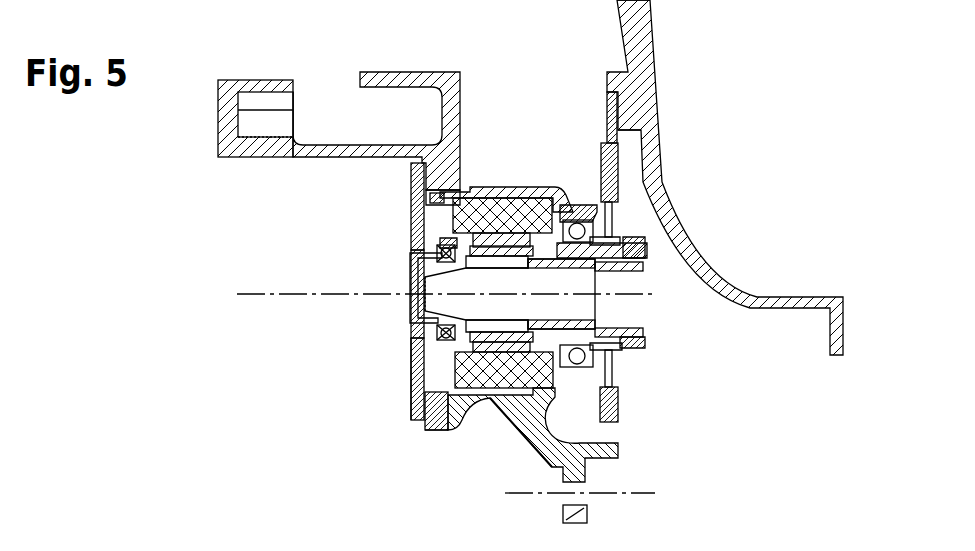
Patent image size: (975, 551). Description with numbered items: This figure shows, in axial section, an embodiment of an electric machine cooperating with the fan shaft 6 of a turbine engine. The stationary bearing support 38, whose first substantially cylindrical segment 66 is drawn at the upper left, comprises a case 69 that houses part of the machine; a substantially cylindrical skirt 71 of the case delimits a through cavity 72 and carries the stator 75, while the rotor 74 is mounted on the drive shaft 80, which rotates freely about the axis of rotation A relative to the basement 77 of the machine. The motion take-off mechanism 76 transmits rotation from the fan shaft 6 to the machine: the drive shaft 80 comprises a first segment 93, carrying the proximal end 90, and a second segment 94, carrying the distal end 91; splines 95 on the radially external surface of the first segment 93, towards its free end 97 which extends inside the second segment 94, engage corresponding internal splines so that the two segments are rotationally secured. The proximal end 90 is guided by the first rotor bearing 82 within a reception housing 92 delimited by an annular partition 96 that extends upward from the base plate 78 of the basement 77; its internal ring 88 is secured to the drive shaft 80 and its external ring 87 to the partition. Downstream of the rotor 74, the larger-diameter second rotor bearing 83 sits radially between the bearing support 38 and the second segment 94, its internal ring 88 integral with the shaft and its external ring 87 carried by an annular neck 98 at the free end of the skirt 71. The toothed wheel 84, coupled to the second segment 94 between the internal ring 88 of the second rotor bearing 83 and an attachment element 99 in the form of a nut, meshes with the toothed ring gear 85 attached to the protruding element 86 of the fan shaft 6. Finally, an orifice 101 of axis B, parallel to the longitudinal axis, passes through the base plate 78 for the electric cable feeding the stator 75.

The fan shaft 6 is at (632, 20).
The bearing support 38 is at (308, 168).
The first substantially cylindrical segment 66 is at (364, 154).
The case 69 is at (420, 438).
The skirt 71 is at (500, 196).
The through cavity 72 is at (410, 383).
The rotor 74 is at (490, 196).
The stator 75 is at (538, 196).
The motion take-off mechanism 76 is at (645, 164).
The basement 77 is at (398, 417).
The base plate 78 is at (410, 330).
The drive shaft 80 is at (612, 277).
The first rotor bearing 82 is at (418, 240).
The second rotor bearing 83 is at (586, 194).
The toothed wheel 84 is at (616, 188).
The toothed ring gear 85 is at (640, 145).
The protruding element 86 is at (627, 106).
The external ring 87 is at (418, 214).
The internal ring 88 is at (434, 366).
The proximal end 90 is at (405, 300).
The distal end 91 is at (645, 333).
The reception housing 92 is at (410, 252).
The first segment 93 is at (505, 383).
The second segment 94 is at (612, 352).
The splines 95 is at (532, 447).
The annular partition 96 is at (441, 430).
The free end 97 is at (605, 320).
The annular neck 98 is at (618, 418).
The attachment element 99 is at (647, 345).
The orifice 101 is at (587, 500).
The axis of rotation A is at (262, 293).
The axis of the orifice B is at (633, 493).